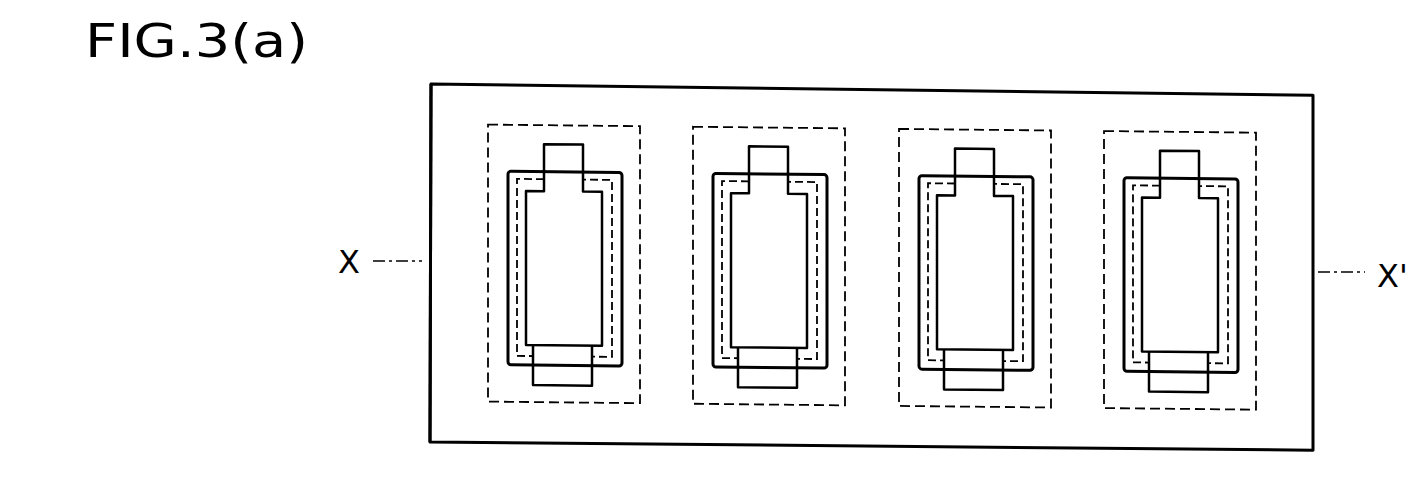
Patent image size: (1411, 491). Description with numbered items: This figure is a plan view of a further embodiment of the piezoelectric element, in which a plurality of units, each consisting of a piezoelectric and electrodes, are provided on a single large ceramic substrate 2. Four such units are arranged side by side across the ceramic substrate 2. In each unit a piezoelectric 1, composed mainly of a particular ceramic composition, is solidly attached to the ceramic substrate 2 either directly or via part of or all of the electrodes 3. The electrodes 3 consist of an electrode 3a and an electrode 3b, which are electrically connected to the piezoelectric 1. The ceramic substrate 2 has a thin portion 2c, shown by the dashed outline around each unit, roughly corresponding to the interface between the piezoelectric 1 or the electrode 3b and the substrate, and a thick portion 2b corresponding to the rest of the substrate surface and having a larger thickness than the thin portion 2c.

The piezoelectric 1 is at (624, 174).
The ceramic substrate 2 is at (467, 428).
The thick portion 2b is at (442, 169).
The thin portion 2c is at (500, 145).
The electrodes 3 is at (352, 326).
The electrode 3a is at (563, 153).
The electrode 3b is at (528, 375).